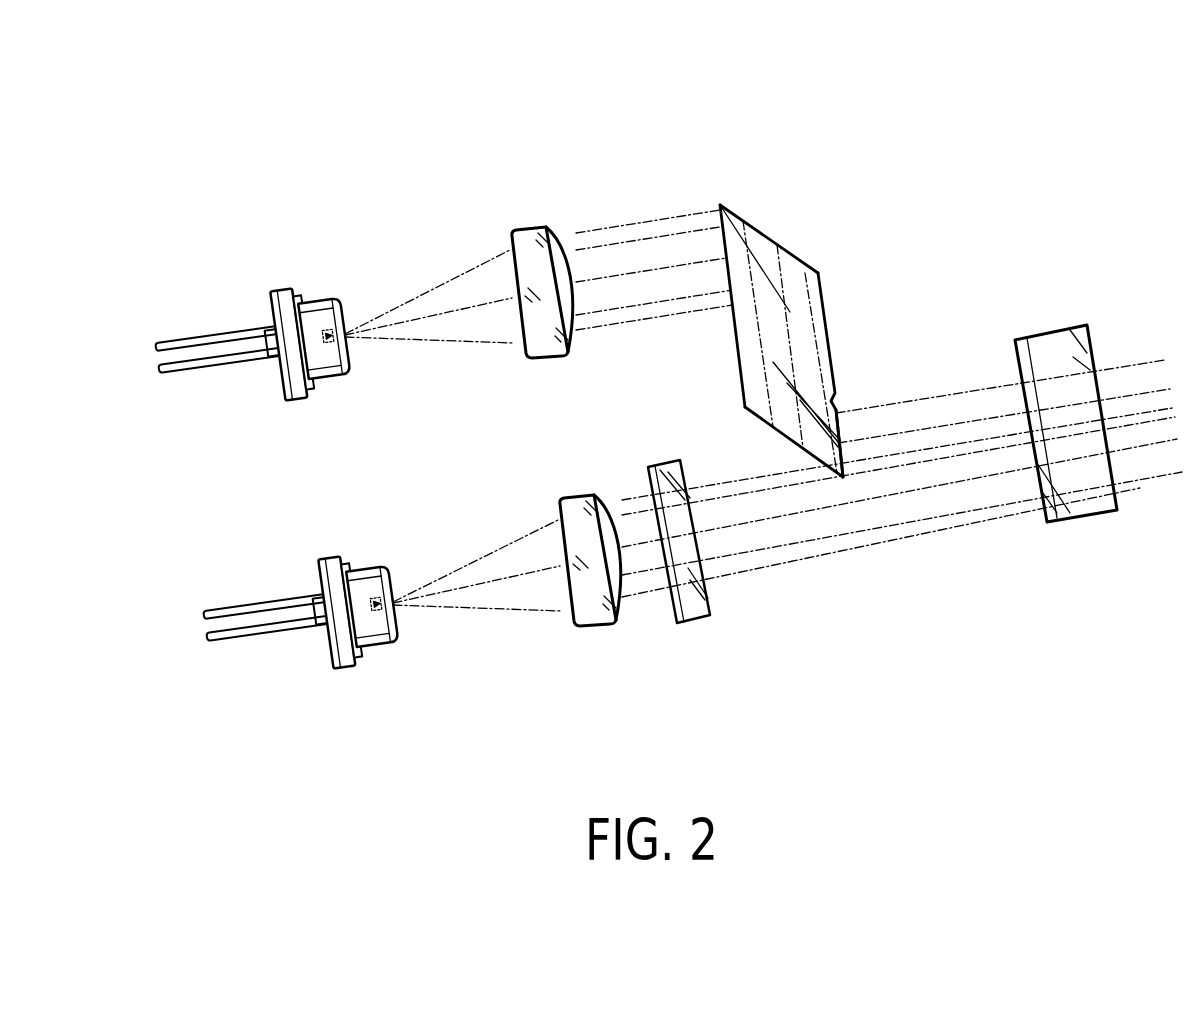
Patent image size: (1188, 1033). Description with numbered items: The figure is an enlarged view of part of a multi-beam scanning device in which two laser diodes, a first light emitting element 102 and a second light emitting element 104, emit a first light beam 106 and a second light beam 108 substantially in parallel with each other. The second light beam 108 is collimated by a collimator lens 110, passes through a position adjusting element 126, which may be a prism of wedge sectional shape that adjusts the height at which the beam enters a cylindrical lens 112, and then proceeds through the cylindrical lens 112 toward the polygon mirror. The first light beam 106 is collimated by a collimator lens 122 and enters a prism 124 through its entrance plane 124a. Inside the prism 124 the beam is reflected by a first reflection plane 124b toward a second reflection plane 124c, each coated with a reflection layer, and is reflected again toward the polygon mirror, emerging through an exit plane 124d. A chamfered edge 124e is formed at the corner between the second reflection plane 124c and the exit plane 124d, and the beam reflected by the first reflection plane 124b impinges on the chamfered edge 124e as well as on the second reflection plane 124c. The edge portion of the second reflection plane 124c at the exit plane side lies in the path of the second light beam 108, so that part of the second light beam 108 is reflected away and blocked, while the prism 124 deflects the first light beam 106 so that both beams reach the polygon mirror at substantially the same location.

The first light emitting element 102 is at (290, 290).
The second light emitting element 104 is at (346, 667).
The first light beam 106 is at (433, 283).
The second light beam 108 is at (499, 608).
The collimator lens 110 is at (603, 625).
The cylindrical lens 112 is at (1084, 518).
The collimator lens 122 is at (540, 229).
The prism 124 is at (782, 353).
The entrance plane 124a is at (738, 356).
The first reflection plane 124b is at (798, 247).
The second reflection plane 124c is at (757, 420).
The exit plane 124d is at (836, 354).
The chamfered edge 124e is at (843, 480).
The position adjusting element 126 is at (712, 607).